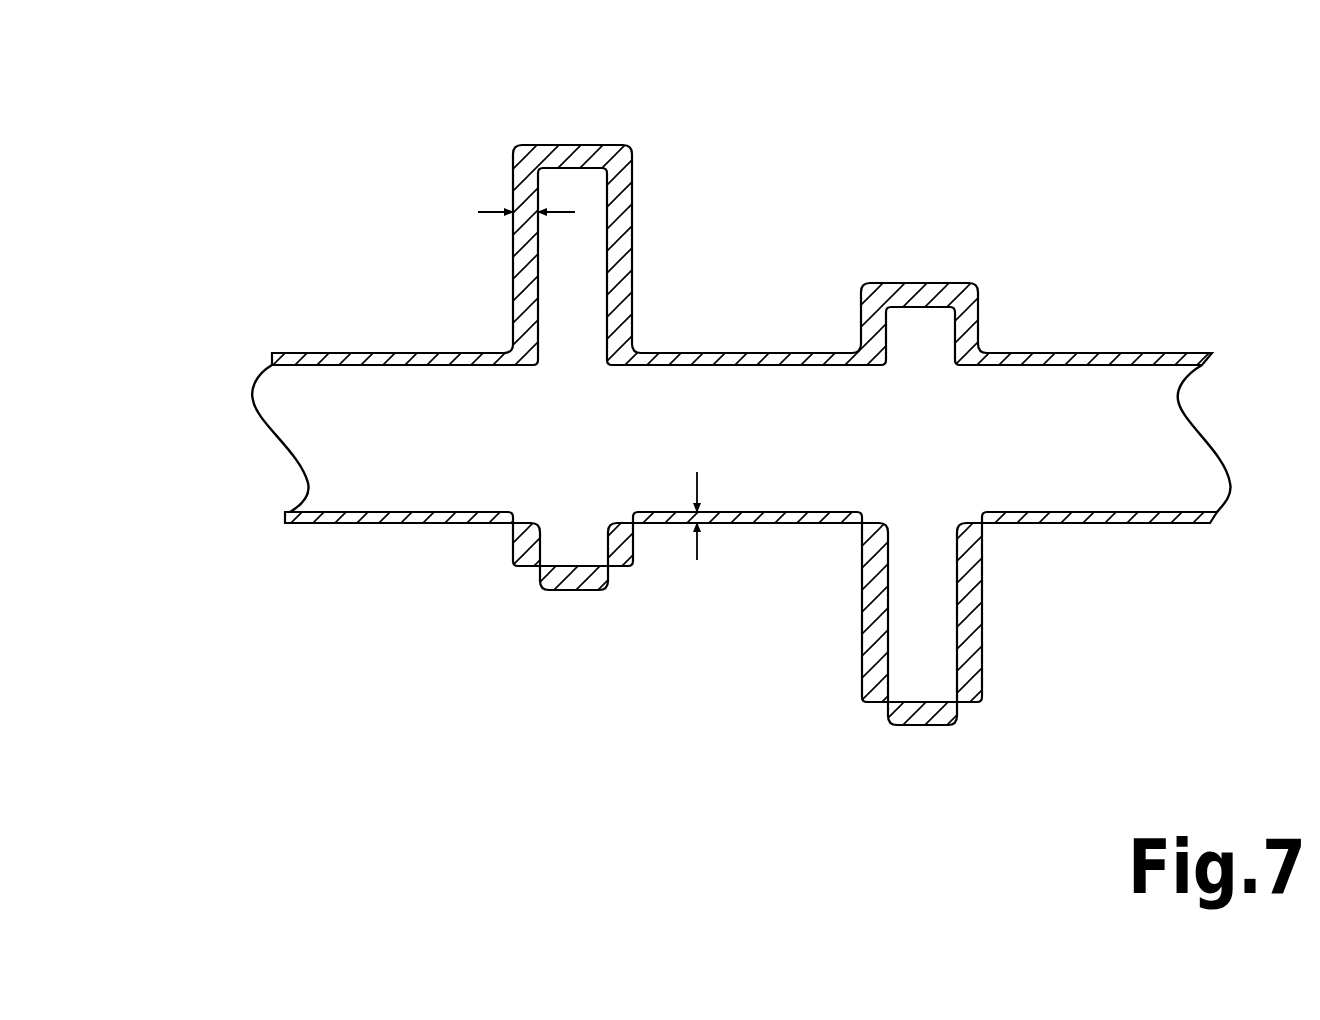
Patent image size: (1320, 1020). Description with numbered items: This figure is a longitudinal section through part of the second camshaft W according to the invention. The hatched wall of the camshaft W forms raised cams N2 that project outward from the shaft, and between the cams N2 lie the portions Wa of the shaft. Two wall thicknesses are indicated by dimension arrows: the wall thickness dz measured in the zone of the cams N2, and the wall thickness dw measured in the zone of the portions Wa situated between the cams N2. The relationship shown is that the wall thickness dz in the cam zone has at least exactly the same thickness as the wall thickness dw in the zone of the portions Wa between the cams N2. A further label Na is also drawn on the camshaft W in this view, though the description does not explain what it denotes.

The cams N2 is at (467, 103).
The portions situated between the cams Wa is at (735, 355).
The film surface region Na is at (392, 353).
The second camshaft W is at (358, 488).
The wall thickness in the zone of the cams dz is at (490, 212).
The wall thickness in the zone of the portions between the cams dw is at (700, 540).